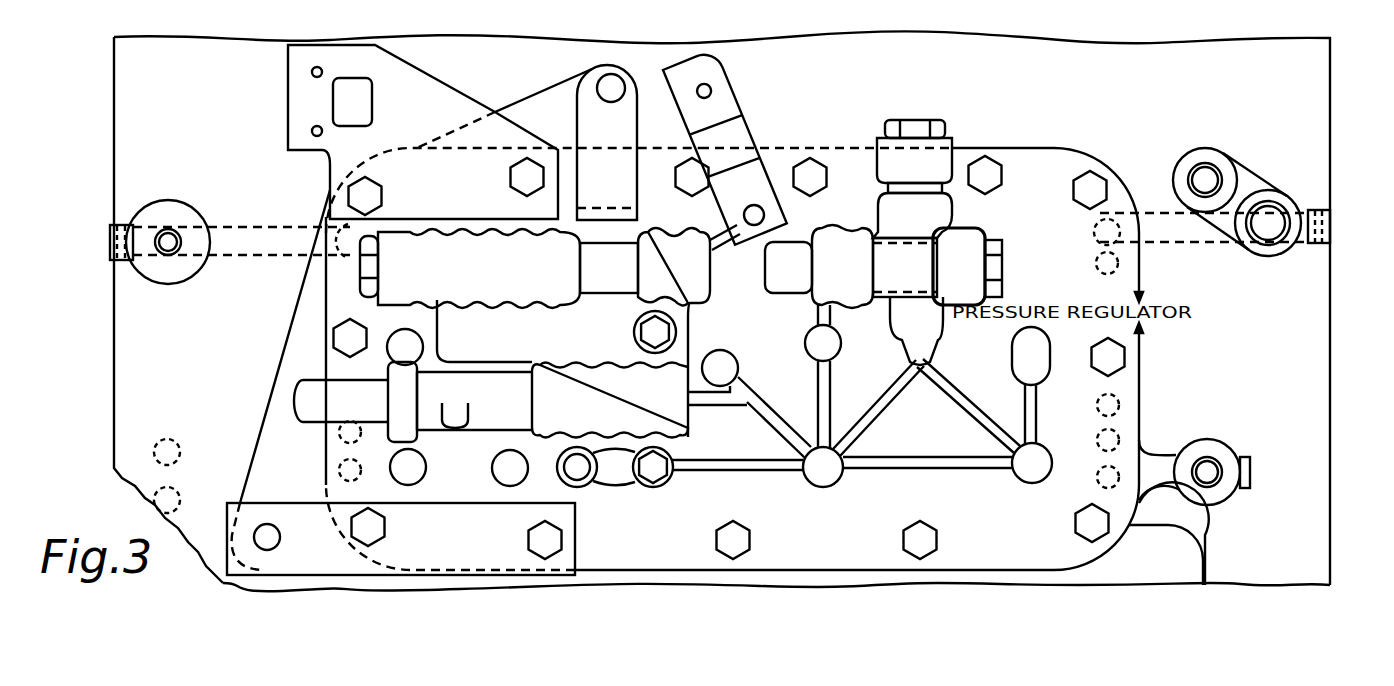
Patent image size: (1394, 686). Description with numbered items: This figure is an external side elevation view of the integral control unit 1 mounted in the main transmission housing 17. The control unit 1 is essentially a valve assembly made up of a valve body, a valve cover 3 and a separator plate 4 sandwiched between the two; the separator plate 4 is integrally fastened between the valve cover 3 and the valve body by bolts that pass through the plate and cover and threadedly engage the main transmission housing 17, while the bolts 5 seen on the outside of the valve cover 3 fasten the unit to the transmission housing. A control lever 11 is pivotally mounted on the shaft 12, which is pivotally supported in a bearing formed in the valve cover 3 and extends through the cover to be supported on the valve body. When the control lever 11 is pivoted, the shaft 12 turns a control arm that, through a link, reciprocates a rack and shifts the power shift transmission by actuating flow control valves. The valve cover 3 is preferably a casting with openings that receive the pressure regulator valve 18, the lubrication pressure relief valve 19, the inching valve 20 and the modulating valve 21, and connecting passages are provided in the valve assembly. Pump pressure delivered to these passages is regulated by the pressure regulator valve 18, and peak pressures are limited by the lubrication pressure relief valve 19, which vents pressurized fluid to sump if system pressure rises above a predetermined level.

The control unit 1 is at (1141, 393).
The valve cover 3 is at (840, 168).
The separator plate 4 is at (265, 440).
The bolts 5 is at (352, 322).
The control lever 11 is at (727, 98).
The shaft 12 is at (764, 215).
The main transmission housing 17 is at (1201, 47).
The pressure regulator valve 18 is at (969, 239).
The lubrication pressure relief valve 19 is at (896, 168).
The inching valve 20 is at (683, 424).
The modulating valve 21 is at (543, 300).